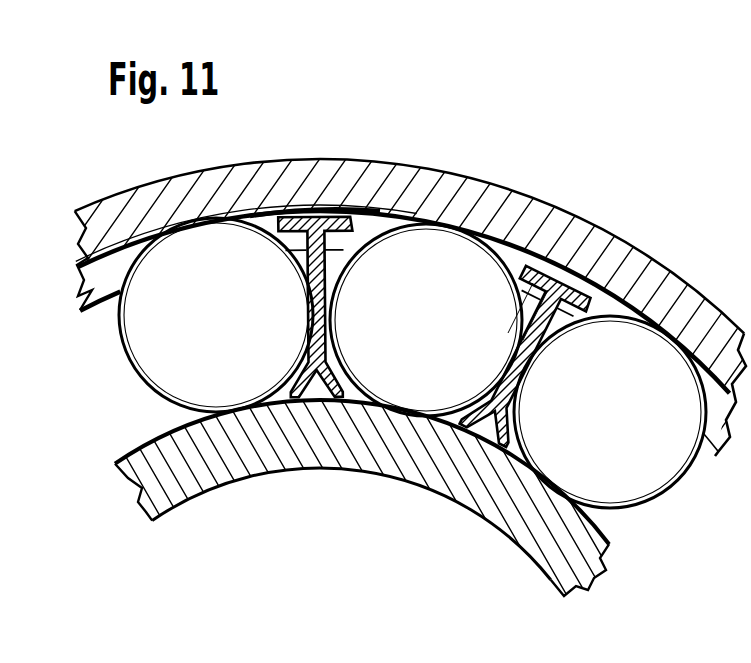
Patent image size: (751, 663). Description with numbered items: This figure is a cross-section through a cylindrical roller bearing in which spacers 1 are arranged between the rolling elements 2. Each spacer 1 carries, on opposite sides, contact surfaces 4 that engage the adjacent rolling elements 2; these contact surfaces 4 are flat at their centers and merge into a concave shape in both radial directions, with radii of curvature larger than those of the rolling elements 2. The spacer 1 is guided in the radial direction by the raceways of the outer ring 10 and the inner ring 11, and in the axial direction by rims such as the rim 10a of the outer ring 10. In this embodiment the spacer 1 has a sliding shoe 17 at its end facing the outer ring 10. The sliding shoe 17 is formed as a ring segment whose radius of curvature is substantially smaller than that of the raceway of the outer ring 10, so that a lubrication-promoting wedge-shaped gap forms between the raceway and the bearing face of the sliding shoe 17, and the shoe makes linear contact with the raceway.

The spacer 1 is at (314, 198).
The rolling elements 2 is at (443, 250).
The contact surfaces 4 is at (308, 262).
The outer ring 10 is at (427, 183).
The rim of the outer ring 10a is at (84, 312).
The inner ring 11 is at (197, 470).
The sliding shoe 17 is at (298, 215).